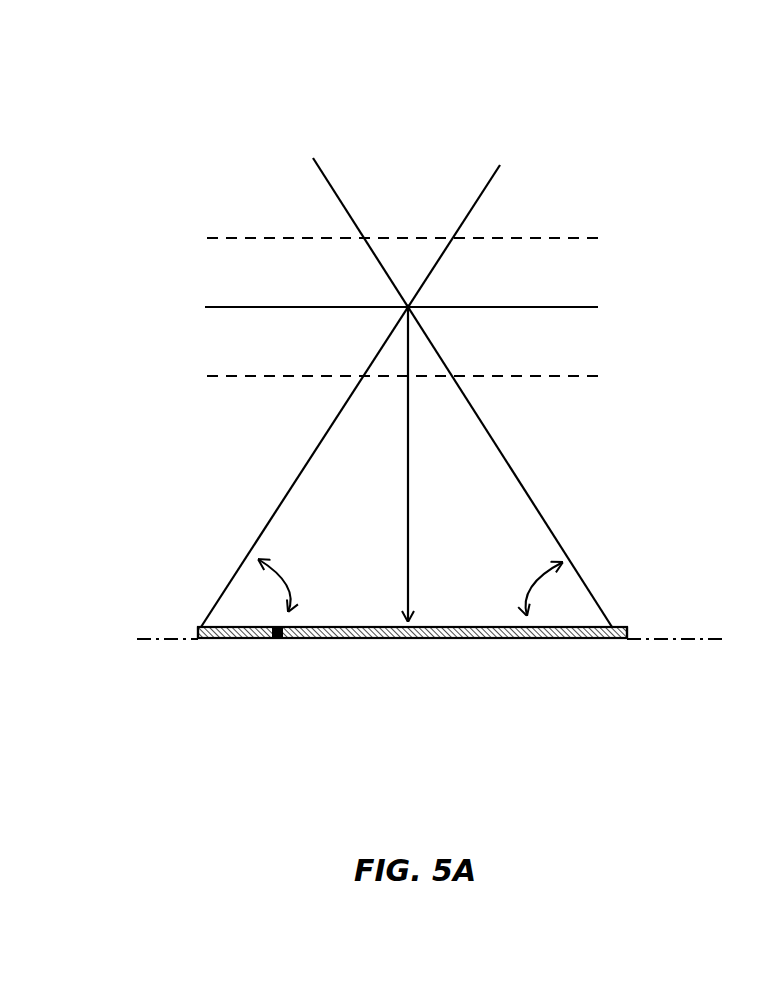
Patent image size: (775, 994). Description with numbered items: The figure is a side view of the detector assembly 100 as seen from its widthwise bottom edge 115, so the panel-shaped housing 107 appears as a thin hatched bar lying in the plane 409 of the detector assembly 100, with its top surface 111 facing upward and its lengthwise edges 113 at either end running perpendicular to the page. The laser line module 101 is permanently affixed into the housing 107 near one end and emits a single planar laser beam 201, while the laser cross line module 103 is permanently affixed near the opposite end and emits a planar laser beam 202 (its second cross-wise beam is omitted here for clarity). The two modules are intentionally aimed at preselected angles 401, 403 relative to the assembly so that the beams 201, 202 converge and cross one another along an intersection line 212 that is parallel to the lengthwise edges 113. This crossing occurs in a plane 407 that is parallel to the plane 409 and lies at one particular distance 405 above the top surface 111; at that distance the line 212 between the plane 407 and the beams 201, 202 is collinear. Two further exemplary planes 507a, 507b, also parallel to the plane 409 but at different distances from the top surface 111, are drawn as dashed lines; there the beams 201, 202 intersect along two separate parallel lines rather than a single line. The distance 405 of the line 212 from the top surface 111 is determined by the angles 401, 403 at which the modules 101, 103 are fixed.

The detector assembly 100 is at (411, 667).
The laser line module 101 is at (609, 588).
The laser cross line module 103 is at (201, 608).
The housing 107 is at (362, 611).
The top surface 111 is at (477, 623).
The lengthwise edges 113 is at (198, 632).
The widthwise edge 115 is at (277, 640).
The planar laser beam 201 is at (349, 205).
The planar laser beam 202 is at (458, 225).
The intersection line 212 is at (405, 305).
The angle 401 is at (535, 575).
The angle 403 is at (278, 570).
The distance 405 is at (408, 443).
The plane 407 is at (266, 308).
The plane of the detector assembly 409 is at (675, 641).
The exemplary plane 507a is at (248, 238).
The exemplary plane 507b is at (237, 376).